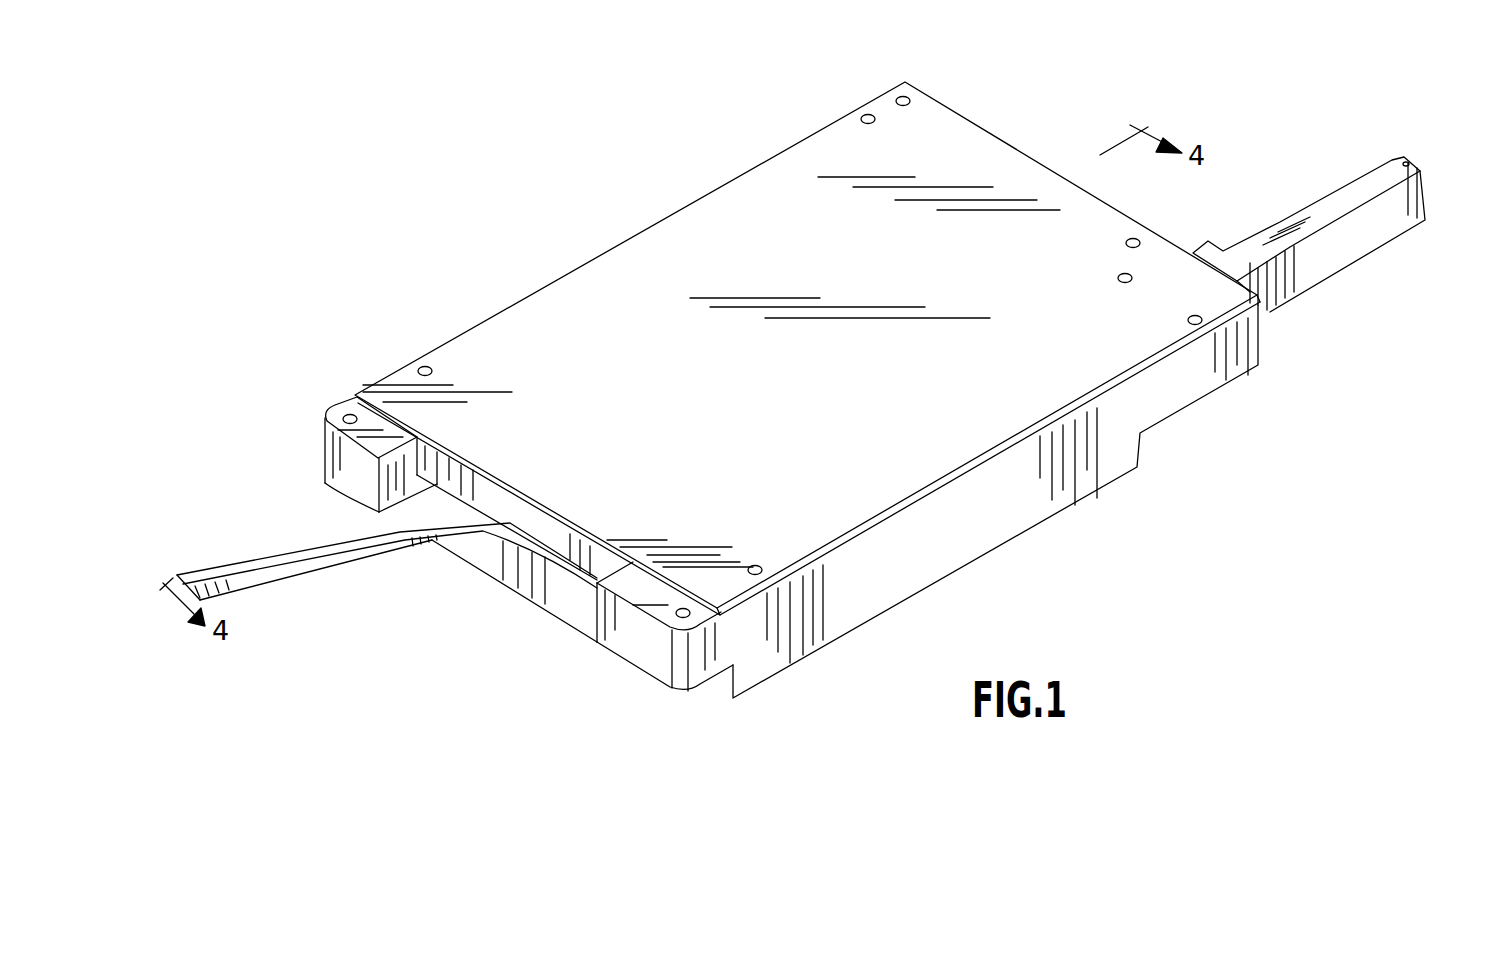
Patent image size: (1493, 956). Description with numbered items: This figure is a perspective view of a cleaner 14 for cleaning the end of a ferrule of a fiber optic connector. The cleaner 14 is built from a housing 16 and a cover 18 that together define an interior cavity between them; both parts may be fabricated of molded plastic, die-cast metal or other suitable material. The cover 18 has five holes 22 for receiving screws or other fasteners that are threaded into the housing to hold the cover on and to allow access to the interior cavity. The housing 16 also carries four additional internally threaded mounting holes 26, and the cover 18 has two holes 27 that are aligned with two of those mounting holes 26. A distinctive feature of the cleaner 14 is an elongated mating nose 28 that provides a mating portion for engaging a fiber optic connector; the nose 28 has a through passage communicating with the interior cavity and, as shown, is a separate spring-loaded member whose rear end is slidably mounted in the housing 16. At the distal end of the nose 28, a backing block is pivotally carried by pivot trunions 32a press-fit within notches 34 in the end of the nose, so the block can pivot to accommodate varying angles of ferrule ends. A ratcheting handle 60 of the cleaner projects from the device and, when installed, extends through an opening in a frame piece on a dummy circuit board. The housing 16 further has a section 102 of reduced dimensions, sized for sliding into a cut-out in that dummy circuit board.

The cleaner 14 is at (988, 77).
The housing 16 is at (838, 607).
The cover 18 is at (563, 293).
The holes 22 is at (426, 366).
The mounting holes 26 is at (350, 413).
The holes 27 is at (904, 97).
The mating nose 28 is at (868, 116).
The pivot trunions 32a is at (1414, 220).
The notches 34 is at (1408, 160).
The ratcheting handle 60 is at (363, 530).
The section of reduced dimensions 102 is at (720, 685).